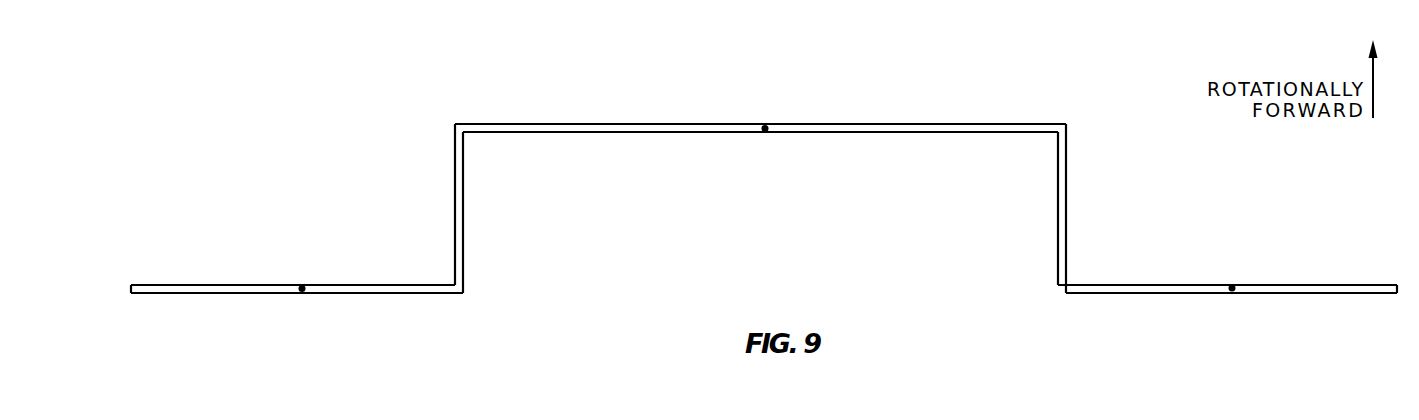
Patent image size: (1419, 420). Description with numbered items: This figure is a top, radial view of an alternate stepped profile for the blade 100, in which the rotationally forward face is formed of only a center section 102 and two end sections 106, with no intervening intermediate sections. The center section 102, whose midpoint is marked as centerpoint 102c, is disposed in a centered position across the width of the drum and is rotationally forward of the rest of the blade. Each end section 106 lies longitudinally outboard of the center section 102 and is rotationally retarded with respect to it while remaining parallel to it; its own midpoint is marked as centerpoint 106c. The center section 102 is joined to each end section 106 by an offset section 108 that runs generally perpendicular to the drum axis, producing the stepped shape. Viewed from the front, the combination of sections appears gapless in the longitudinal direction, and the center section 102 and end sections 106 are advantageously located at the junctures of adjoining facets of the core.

The blade 100 is at (764, 193).
The center section 102 is at (865, 133).
The centerpoint of center section 102c is at (765, 128).
The end section 106 is at (272, 292).
The centerpoint of end section 106c is at (302, 286).
The offset section 108 is at (463, 195).